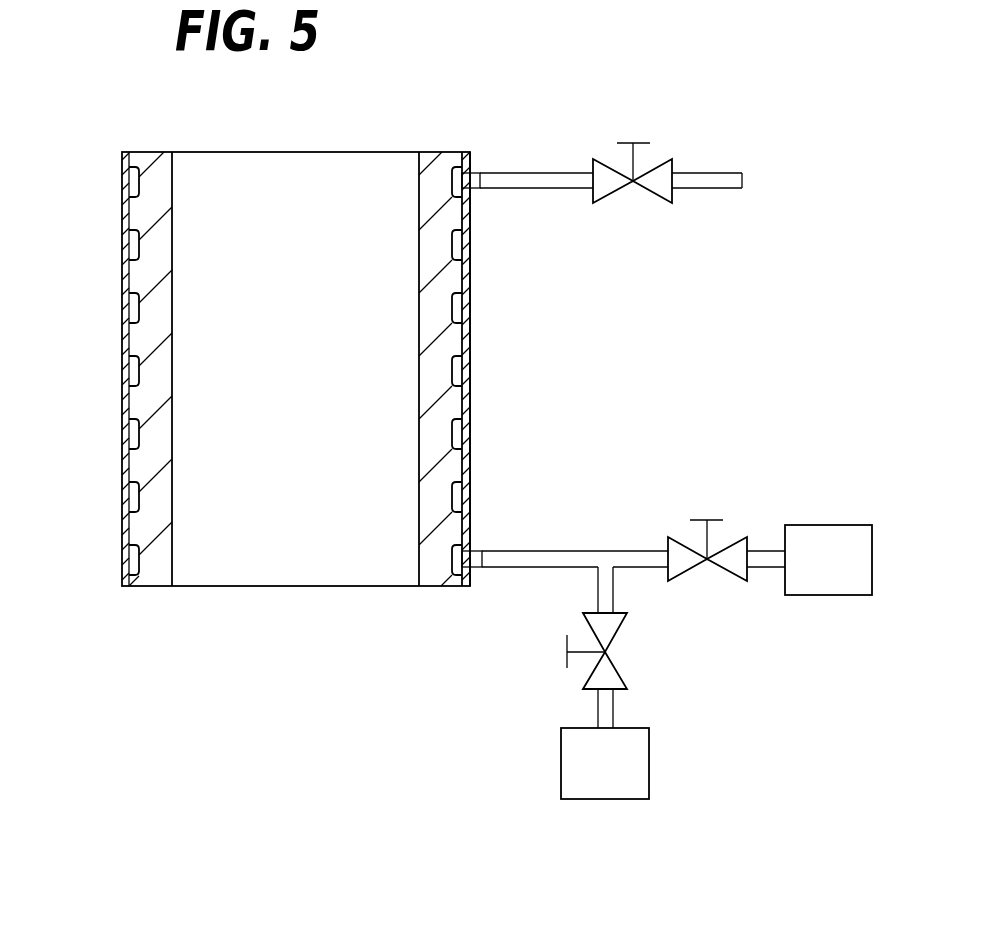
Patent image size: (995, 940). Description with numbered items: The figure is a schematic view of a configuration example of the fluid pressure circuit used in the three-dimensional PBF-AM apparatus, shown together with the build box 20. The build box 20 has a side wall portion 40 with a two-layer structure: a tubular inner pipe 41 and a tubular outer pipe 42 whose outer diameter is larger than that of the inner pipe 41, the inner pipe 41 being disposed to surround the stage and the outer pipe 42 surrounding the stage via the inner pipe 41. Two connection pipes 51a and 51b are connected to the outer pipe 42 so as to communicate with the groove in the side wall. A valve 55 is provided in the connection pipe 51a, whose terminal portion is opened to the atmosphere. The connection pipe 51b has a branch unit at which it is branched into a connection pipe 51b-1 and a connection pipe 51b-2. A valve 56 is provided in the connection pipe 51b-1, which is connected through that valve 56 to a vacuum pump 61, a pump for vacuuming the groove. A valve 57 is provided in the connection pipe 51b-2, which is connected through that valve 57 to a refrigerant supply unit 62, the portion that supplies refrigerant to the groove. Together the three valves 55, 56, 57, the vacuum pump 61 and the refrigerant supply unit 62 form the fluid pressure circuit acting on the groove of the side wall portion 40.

The build box 20 is at (84, 342).
The side wall portion 40 is at (457, 320).
The inner pipe 41 is at (443, 152).
The outer pipe 42 is at (468, 152).
The connection pipe 51a is at (566, 173).
The connection pipe 51b is at (533, 551).
The connection pipe 51b-1 is at (598, 595).
The connection pipe 51b-2 is at (645, 551).
The valve 55 is at (645, 192).
The valve 56 is at (616, 640).
The valve 57 is at (730, 576).
The vacuum pump 61 is at (650, 765).
The refrigerant supply unit 62 is at (829, 525).